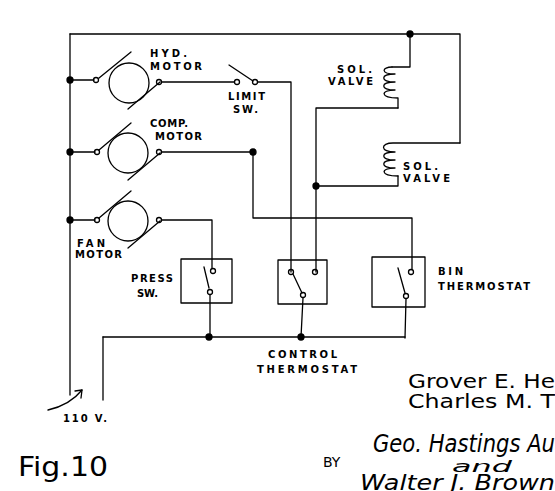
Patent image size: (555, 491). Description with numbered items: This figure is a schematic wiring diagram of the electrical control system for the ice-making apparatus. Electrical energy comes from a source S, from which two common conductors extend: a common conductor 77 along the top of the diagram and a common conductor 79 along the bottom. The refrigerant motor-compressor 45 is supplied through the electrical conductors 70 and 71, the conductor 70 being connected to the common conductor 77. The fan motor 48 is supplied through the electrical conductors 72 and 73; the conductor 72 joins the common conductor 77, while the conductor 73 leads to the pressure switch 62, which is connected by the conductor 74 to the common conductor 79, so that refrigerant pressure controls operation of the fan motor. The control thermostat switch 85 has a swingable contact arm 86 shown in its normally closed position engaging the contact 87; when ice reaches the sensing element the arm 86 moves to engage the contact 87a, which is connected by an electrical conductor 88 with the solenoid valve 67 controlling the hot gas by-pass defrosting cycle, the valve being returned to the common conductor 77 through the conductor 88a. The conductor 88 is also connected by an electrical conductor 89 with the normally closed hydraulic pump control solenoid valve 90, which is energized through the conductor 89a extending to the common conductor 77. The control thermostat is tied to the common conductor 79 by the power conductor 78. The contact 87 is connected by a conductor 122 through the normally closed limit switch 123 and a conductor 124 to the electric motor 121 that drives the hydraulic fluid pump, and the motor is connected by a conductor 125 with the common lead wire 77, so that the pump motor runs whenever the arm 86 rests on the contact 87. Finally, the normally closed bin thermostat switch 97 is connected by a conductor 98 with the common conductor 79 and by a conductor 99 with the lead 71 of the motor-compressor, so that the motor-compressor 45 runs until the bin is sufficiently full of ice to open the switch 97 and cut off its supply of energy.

The common conductor 77 is at (380, 37).
The source of electrical energy S is at (57, 402).
The common conductor 79 is at (180, 337).
The conductor 125 is at (92, 78).
The electric motor 121 is at (113, 86).
The conductor 124 is at (207, 80).
The limit switch 123 is at (272, 63).
The conductor 122 is at (292, 82).
The conductor 88a is at (411, 52).
The solenoid valve 67 is at (400, 82).
The conductor 89a is at (460, 117).
The electrical conductor 88 is at (316, 156).
The electrical conductor 89 is at (350, 186).
The hydraulic pump control solenoid valve 90 is at (400, 152).
The electrical conductor 70 is at (93, 151).
The refrigerant motor-compressor 45 is at (113, 158).
The electrical conductor 71 is at (233, 153).
The electrical conductor 72 is at (100, 215).
The fan motor 48 is at (152, 198).
The electrical conductor 73 is at (210, 221).
The pressure switch 62 is at (181, 300).
The electrical conductor 74 is at (208, 320).
The control thermostat switch 85 is at (279, 303).
The contact 87 is at (279, 268).
The contact 87a is at (322, 270).
The swingable contact arm 86 is at (297, 283).
The power conductor 78 is at (300, 322).
The conductor 99 is at (412, 226).
The bin thermostat switch 97 is at (418, 278).
The conductor 98 is at (408, 328).